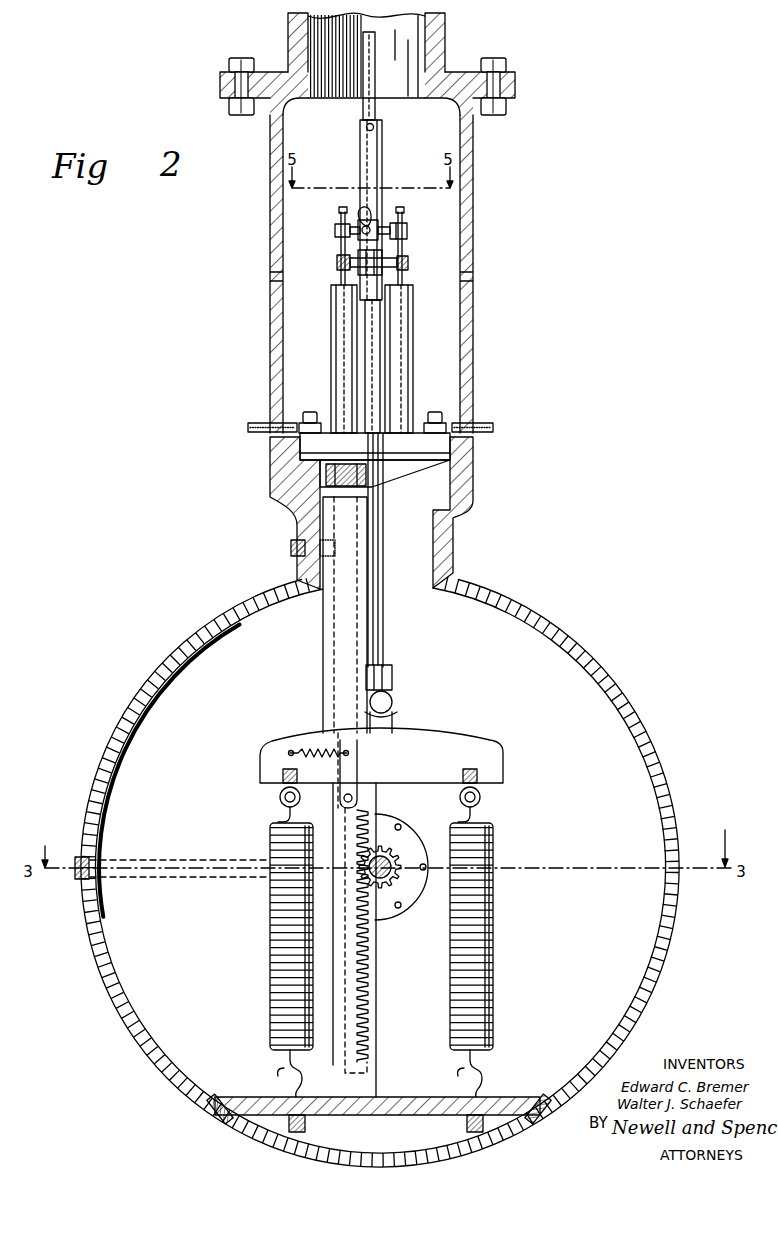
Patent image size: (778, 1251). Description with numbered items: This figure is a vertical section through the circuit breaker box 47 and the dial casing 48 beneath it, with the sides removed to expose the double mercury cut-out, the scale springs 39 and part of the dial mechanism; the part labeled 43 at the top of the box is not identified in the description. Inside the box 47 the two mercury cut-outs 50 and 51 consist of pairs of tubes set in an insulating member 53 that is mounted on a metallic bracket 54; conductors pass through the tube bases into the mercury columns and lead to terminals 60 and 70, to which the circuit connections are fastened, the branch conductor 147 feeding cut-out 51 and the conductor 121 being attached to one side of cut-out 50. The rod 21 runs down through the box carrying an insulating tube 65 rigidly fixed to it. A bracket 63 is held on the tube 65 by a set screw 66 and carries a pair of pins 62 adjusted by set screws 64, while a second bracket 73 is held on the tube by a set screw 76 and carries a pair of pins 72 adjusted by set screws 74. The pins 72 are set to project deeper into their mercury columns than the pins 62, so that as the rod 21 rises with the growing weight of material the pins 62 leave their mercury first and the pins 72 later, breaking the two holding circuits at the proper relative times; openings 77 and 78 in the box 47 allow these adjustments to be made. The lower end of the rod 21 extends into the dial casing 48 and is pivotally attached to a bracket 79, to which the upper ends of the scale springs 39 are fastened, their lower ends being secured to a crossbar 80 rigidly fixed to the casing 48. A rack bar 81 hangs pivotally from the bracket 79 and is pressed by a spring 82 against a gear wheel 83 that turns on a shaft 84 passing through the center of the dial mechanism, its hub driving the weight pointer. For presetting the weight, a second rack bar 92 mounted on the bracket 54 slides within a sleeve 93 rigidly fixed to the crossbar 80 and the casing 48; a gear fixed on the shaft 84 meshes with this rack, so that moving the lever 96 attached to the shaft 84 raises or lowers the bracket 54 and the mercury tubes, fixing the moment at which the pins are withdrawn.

The neck 43 is at (447, 48).
The rod 21 is at (377, 80).
The insulating tube 65 is at (384, 147).
The box 47 is at (466, 238).
The set screw 66 is at (365, 224).
The bracket 63 is at (393, 224).
The pins 62 is at (343, 220).
The set screws 64 is at (407, 231).
The set screw 76 is at (383, 258).
The bracket 73 is at (408, 265).
The set screws 74 is at (337, 263).
The pins 72 is at (350, 270).
The mercury cut-out 51 is at (332, 331).
The mercury cut-out 50 is at (413, 333).
The opening 78 is at (270, 359).
The opening 77 is at (473, 358).
The conductor 121 is at (262, 424).
The terminal 70 is at (313, 412).
The terminal 60 is at (440, 412).
The branch conductor 147 is at (480, 426).
The insulating member 53 is at (455, 444).
The metallic bracket 54 is at (397, 468).
The rack bar 92 is at (360, 582).
The sleeve 93 is at (324, 631).
The spring 82 is at (320, 745).
The bracket 79 is at (428, 742).
The dial casing 48 is at (657, 762).
The shaft 84 is at (395, 851).
The gear wheel 83 is at (406, 898).
The scale springs 39 is at (269, 929).
The rack bar 81 is at (360, 960).
The crossbar 80 is at (401, 1097).
The lever 96 is at (80, 882).